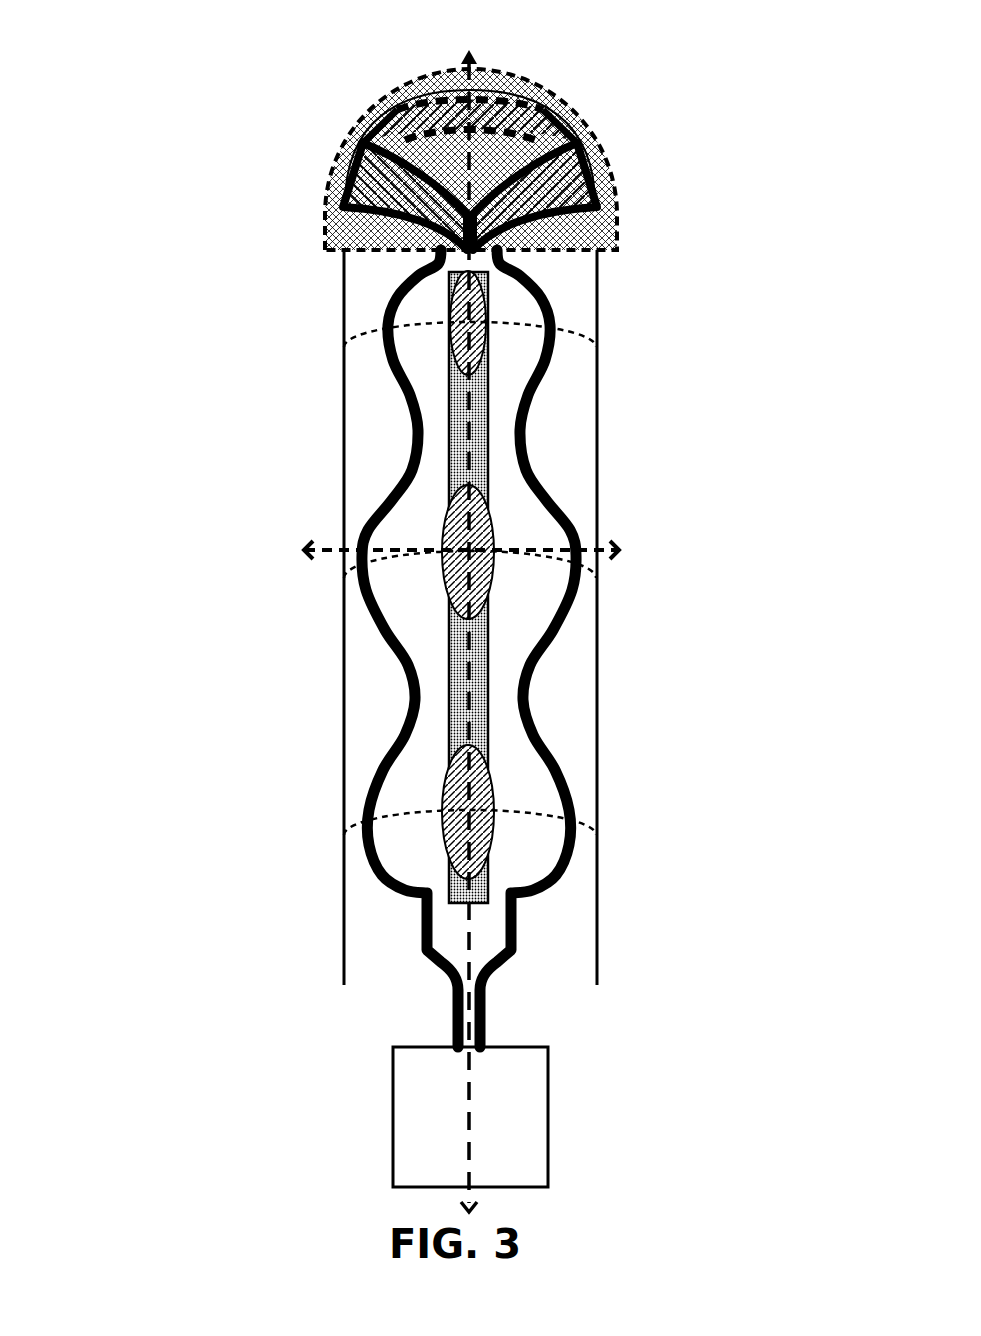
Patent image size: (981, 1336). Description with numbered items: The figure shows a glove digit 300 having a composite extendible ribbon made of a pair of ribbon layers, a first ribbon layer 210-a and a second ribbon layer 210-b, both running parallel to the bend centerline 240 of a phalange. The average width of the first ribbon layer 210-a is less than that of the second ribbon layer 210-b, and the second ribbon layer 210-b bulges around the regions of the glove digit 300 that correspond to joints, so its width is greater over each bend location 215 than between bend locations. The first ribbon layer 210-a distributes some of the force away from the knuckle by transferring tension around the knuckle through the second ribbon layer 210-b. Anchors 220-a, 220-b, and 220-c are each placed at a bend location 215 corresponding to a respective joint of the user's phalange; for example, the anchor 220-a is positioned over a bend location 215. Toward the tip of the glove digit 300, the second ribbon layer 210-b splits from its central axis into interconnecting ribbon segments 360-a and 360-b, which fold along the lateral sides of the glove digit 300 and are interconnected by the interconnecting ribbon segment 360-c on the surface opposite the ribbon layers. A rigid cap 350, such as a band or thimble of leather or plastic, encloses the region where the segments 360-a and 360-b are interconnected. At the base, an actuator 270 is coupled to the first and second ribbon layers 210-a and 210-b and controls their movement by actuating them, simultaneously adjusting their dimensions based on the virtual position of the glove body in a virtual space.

The glove digit 300 is at (92, 44).
The rigid cap 350 is at (330, 252).
The interconnecting ribbon segment 360-a is at (597, 211).
The interconnecting ribbon segment 360-b is at (345, 177).
The interconnecting ribbon segment 360-c is at (380, 110).
The bend centerline 240 is at (508, 612).
The first ribbon layer 210-a is at (463, 652).
The second ribbon layer 210-b is at (538, 810).
The anchor 220-a is at (458, 370).
The anchor 220-b is at (455, 595).
The anchor 220-c is at (462, 847).
The bend location 215 is at (580, 345).
The actuator 270 is at (423, 1071).